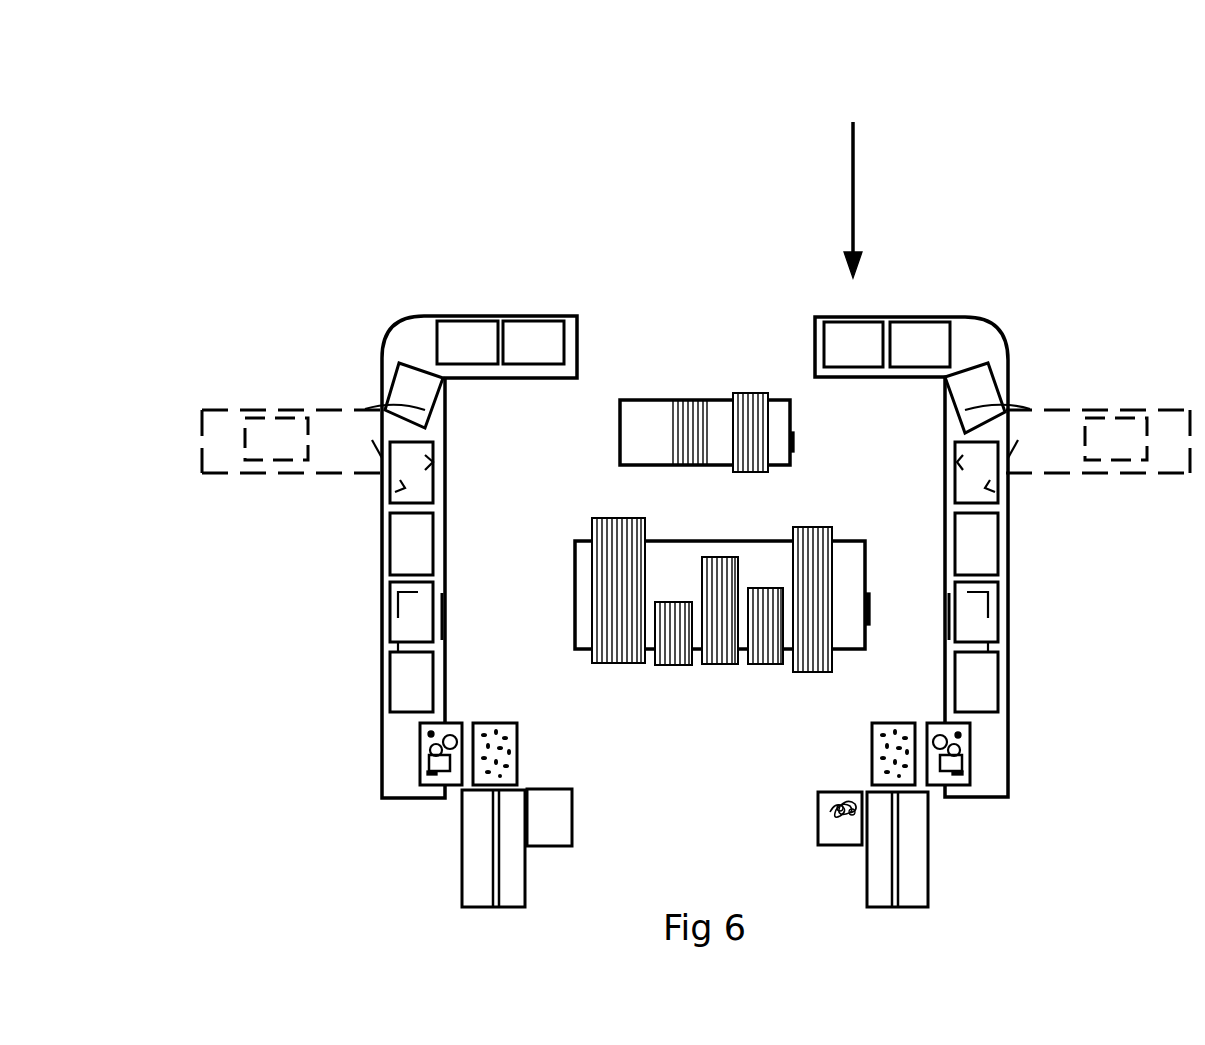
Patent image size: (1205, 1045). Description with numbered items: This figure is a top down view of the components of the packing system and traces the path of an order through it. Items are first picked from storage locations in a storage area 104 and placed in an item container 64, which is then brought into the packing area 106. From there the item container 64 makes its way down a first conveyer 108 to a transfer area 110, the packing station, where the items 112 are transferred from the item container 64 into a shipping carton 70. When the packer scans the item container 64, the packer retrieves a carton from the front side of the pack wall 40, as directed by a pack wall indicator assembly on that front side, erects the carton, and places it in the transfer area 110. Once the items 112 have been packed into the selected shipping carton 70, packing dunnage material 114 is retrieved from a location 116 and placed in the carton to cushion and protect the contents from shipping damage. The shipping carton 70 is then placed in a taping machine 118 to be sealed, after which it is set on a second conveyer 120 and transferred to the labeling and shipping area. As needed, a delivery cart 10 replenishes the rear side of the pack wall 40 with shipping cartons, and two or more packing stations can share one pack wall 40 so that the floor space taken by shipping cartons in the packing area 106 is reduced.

The storage area 104 is at (828, 30).
The packing area 106 is at (177, 283).
The first conveyer 108 is at (933, 316).
The item container 64 is at (880, 321).
The delivery cart 10 is at (792, 425).
The pack wall 40 is at (867, 557).
The second conveyer 120 is at (474, 700).
The transfer area 110 is at (923, 690).
The shipping carton 70 is at (888, 723).
The items 112 is at (942, 796).
The packing dunnage material 114 is at (824, 821).
The location 116 is at (818, 802).
The taping machine 118 is at (867, 888).